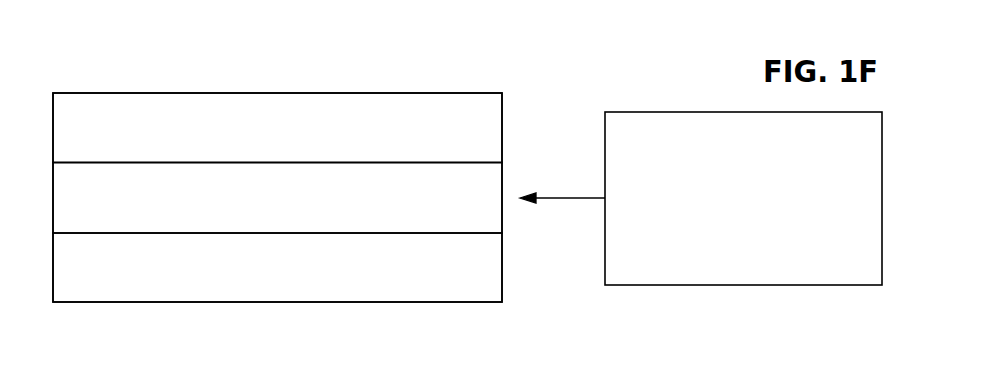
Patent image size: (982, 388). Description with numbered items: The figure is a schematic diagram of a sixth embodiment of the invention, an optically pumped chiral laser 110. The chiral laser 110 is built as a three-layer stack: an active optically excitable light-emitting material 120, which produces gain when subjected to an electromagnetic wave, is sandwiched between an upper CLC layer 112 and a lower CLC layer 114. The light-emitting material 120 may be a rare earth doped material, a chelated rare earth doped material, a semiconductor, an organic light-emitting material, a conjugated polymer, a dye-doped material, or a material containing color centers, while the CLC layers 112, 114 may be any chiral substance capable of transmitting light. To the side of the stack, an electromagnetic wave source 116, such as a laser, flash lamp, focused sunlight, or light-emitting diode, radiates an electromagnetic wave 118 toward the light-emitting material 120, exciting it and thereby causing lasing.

The chiral laser 110 is at (553, 88).
The upper CLC layer 112 is at (278, 93).
The lower CLC layer 114 is at (277, 302).
The electromagnetic wave source 116 is at (742, 285).
The electromagnetic wave 118 is at (572, 198).
The active optically excitable light-emitting material 120 is at (183, 197).